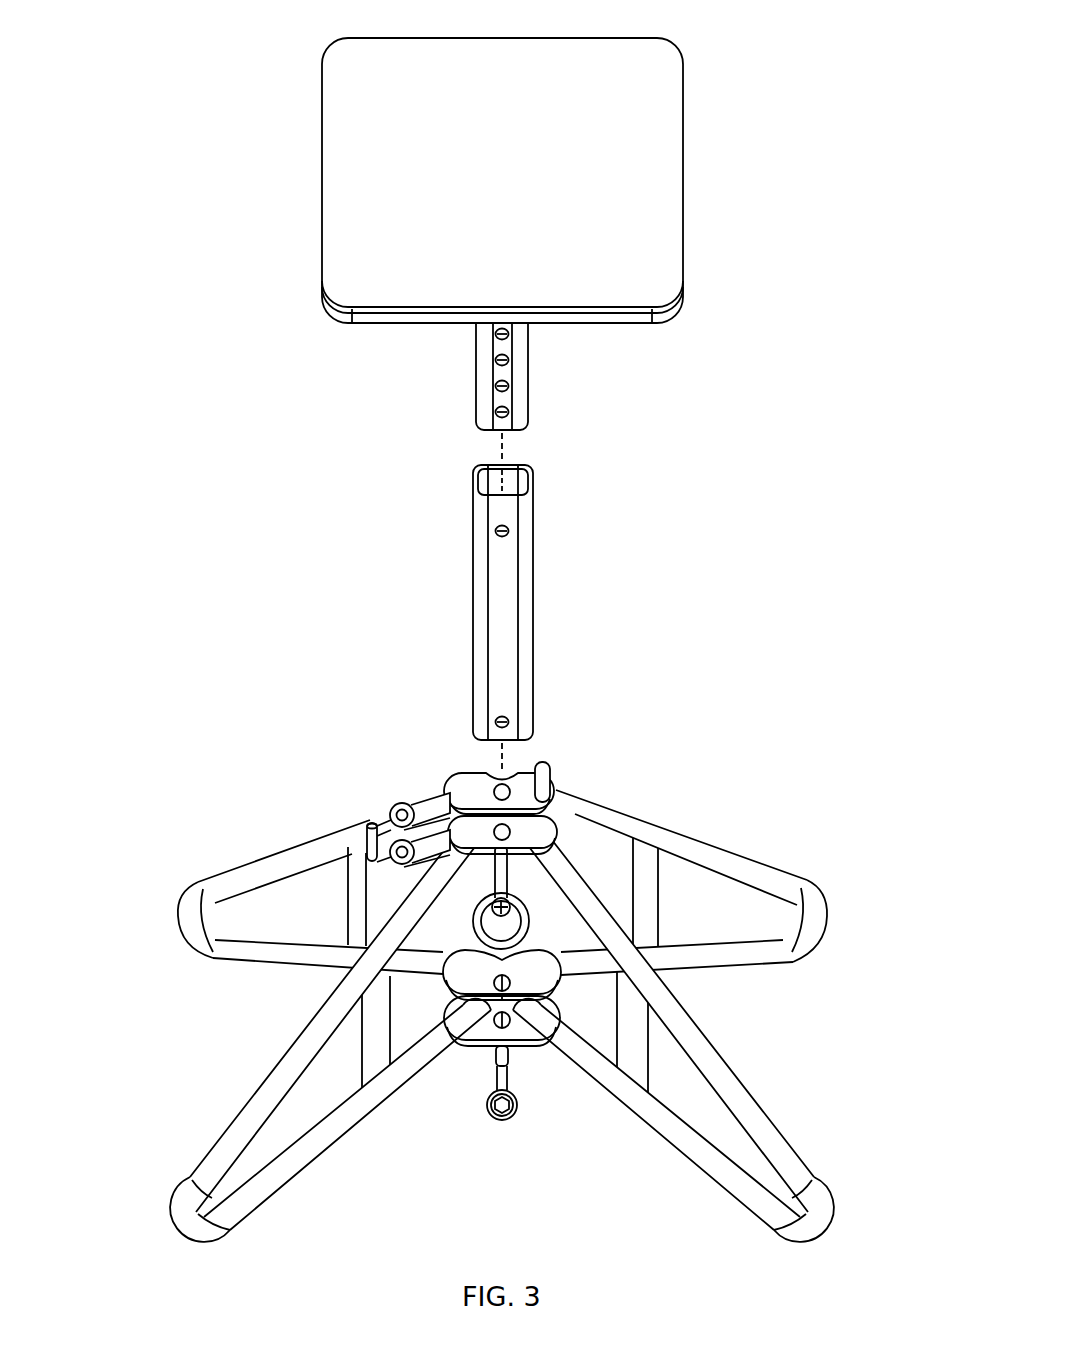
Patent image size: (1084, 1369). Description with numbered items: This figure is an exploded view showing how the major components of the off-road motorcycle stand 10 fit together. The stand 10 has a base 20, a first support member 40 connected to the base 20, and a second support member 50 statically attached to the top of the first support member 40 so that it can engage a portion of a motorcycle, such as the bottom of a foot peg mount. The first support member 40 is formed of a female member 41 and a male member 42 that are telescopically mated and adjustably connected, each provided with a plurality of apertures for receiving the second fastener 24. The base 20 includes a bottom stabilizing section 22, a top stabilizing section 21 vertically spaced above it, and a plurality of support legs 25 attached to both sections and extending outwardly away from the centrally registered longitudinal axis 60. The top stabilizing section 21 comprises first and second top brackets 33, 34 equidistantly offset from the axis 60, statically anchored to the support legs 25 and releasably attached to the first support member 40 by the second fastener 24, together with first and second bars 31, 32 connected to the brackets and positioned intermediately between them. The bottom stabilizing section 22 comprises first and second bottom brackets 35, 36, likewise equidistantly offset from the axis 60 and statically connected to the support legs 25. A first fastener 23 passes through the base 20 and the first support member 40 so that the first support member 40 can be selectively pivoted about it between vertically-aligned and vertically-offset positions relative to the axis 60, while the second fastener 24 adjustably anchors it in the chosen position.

The motorcycle stand 10 is at (192, 258).
The base 20 is at (514, 917).
The top stabilizing section 21 is at (467, 729).
The bottom stabilizing section 22 is at (509, 1085).
The first fastener 23 is at (505, 1122).
The second fastener 24 is at (507, 905).
The support legs 25 is at (287, 865).
The first bar 31 is at (370, 830).
The second bar 32 is at (541, 783).
The first top bracket 33 is at (473, 787).
The second top bracket 34 is at (450, 818).
The first bottom bracket 35 is at (517, 1025).
The second bottom bracket 36 is at (537, 970).
The first support member 40 is at (496, 531).
The female member 41 is at (508, 586).
The male member 42 is at (522, 393).
The second support member 50 is at (641, 188).
The centrally registered longitudinal axis 60 is at (505, 755).